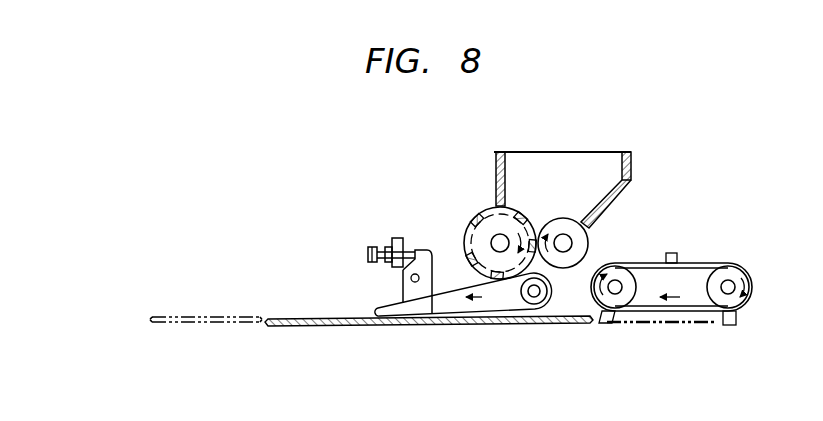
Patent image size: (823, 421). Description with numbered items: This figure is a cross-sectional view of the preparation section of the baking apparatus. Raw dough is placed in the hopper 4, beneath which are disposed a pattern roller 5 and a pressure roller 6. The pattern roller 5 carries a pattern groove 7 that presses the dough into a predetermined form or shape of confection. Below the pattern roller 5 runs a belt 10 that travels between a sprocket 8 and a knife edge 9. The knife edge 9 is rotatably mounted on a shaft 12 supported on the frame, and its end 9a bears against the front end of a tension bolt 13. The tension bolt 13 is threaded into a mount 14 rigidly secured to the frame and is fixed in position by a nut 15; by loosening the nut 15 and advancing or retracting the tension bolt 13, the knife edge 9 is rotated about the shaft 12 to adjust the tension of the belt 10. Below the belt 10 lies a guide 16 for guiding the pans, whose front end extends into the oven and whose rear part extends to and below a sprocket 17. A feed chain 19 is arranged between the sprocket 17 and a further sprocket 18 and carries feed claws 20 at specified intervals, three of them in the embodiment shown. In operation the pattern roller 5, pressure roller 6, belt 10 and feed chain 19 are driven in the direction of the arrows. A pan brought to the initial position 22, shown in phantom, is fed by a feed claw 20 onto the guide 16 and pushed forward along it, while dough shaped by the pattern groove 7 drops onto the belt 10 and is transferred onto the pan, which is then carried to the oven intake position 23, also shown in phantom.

The hopper 4 is at (631, 164).
The pattern roller 5 is at (482, 226).
The pressure roller 6 is at (589, 243).
The pattern groove 7 is at (523, 216).
The sprocket 8 is at (534, 306).
The knife edge 9 is at (424, 316).
The end of the knife edge 9a is at (425, 248).
The belt 10 is at (481, 316).
The shaft 12 is at (411, 279).
The tension bolt 13 is at (369, 250).
The mount 14 is at (397, 238).
The nut 15 is at (385, 261).
The guide 16 is at (344, 328).
The sprocket 17 is at (621, 308).
The sprocket 18 is at (740, 268).
The feed chain 19 is at (699, 262).
The feed claw 20 is at (731, 326).
The initial position 22 is at (678, 325).
The oven intake position 23 is at (214, 316).